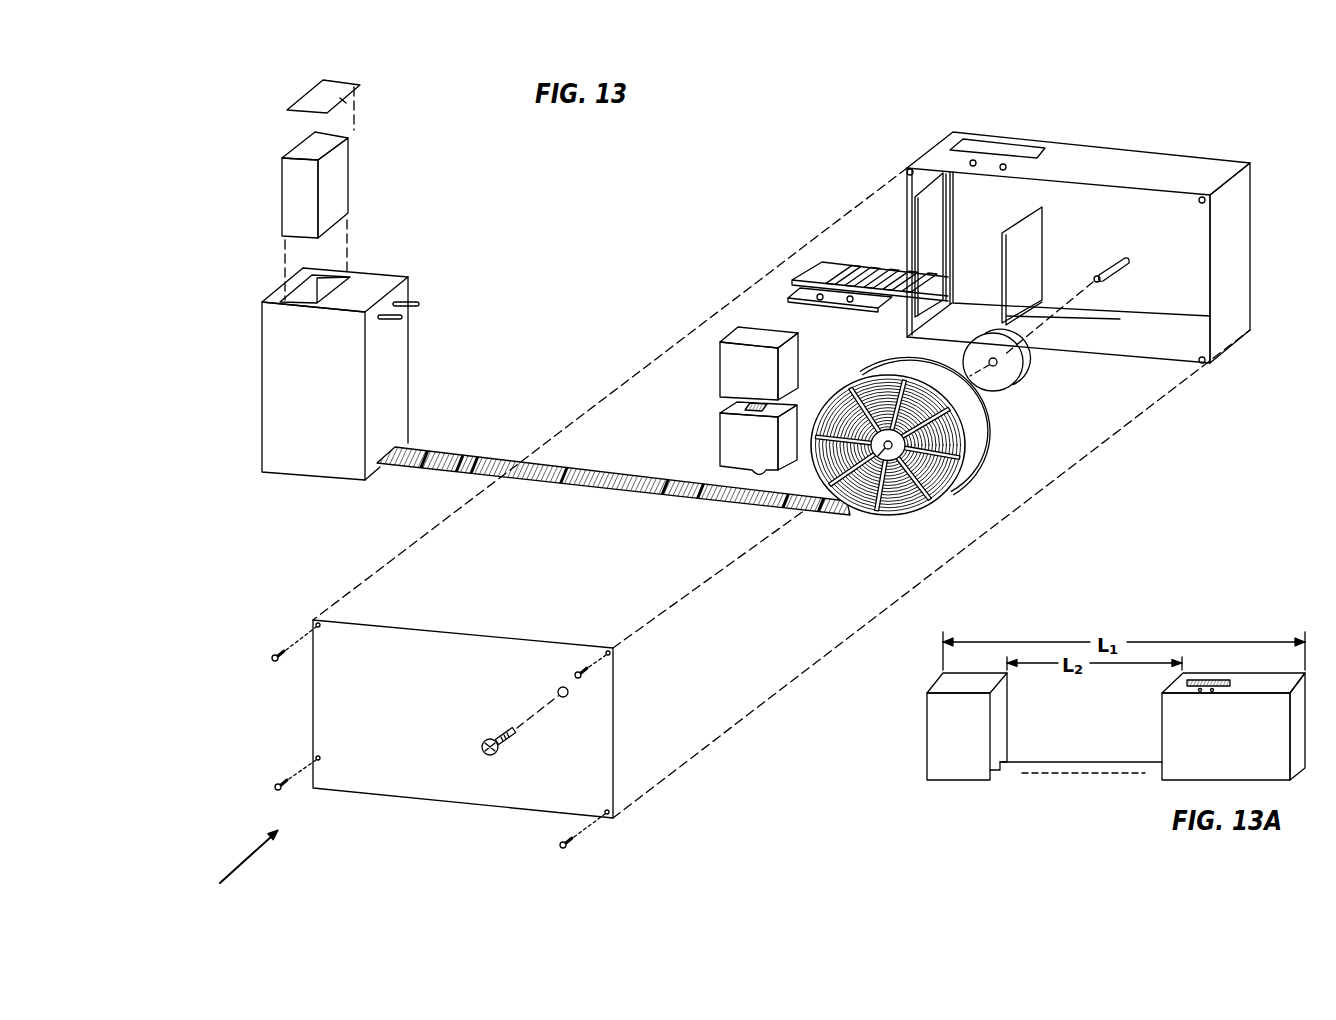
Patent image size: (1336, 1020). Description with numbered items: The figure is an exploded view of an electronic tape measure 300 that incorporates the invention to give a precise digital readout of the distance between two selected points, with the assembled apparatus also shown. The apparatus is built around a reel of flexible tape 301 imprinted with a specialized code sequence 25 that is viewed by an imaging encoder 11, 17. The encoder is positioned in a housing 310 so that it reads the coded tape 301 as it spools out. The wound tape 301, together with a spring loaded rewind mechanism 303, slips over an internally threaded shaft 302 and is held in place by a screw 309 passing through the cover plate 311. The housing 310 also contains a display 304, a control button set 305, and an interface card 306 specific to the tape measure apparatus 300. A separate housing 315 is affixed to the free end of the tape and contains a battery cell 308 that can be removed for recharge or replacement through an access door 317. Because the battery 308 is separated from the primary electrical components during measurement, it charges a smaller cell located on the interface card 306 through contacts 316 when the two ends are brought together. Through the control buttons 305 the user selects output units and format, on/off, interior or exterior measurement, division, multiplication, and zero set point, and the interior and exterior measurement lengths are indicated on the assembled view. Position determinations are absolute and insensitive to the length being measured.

The electronic tape measure 300 is at (234, 874).
The reel of flexible tape 301 is at (972, 458).
The internally threaded shaft 302 is at (1112, 277).
The spring loaded rewind mechanism 303 is at (1023, 382).
The display 304 is at (815, 272).
The control button set 305 is at (797, 290).
The interface card 306 is at (933, 200).
The battery cell 308 is at (342, 168).
The screw 309 is at (478, 753).
The housing 310 is at (1173, 162).
The cover plate 311 is at (310, 697).
The separate housing 315 is at (270, 455).
The contacts 316 is at (422, 302).
The access door 317 is at (337, 88).
The imaging encoder 17 is at (718, 365).
The imaging encoder 11 is at (718, 432).
The code sequence 25 is at (590, 487).